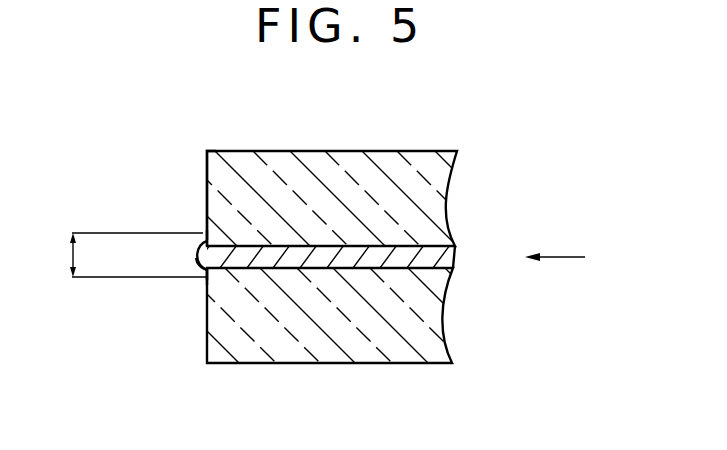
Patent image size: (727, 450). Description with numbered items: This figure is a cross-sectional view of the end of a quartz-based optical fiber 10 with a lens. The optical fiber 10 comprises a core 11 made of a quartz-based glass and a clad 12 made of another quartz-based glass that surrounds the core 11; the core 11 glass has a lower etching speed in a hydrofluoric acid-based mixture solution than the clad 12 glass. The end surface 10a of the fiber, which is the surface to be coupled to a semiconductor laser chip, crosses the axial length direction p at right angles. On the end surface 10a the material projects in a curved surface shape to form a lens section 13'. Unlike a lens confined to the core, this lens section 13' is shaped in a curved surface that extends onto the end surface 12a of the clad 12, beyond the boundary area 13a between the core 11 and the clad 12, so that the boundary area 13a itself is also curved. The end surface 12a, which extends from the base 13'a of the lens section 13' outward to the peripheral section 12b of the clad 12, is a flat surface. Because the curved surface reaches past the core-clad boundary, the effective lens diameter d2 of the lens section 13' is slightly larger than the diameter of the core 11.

The optical fiber 10 is at (304, 236).
The end surface 10a is at (181, 218).
The core 11 is at (443, 260).
The clad 12 is at (430, 210).
The end surface 12a is at (205, 197).
The peripheral section 12b is at (207, 151).
The lens section 13' is at (148, 285).
The boundary area 13a is at (204, 268).
The base 13'a is at (180, 333).
The effective lens diameter d2 is at (73, 257).
The axial length direction p is at (564, 258).